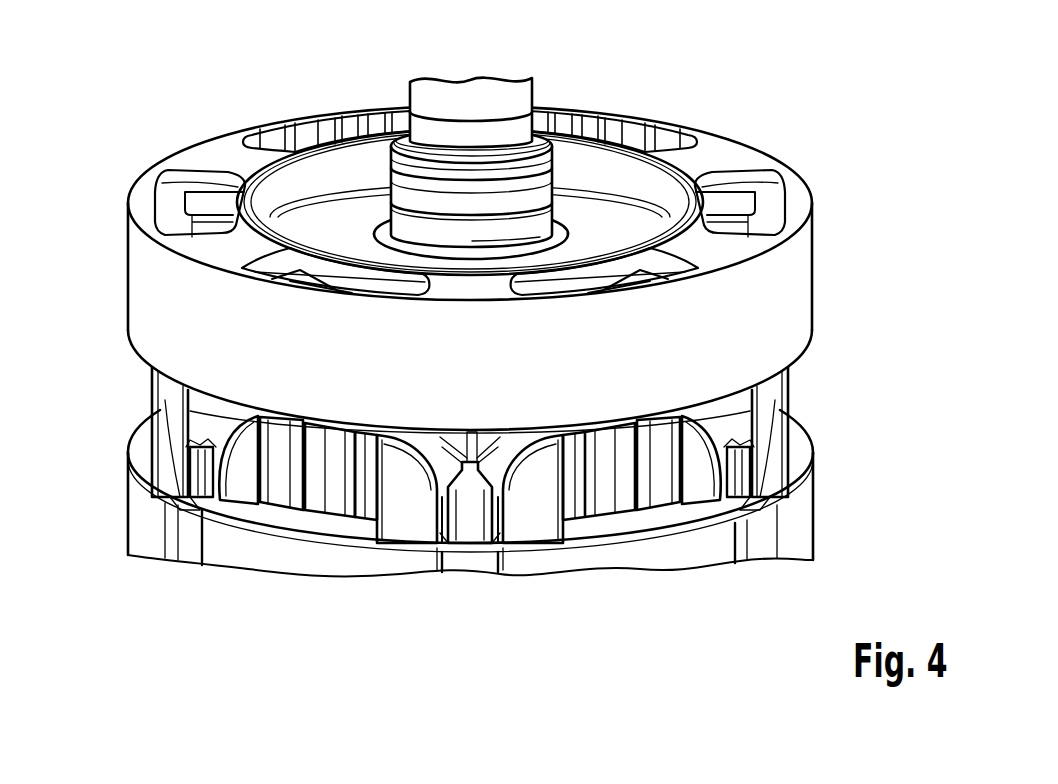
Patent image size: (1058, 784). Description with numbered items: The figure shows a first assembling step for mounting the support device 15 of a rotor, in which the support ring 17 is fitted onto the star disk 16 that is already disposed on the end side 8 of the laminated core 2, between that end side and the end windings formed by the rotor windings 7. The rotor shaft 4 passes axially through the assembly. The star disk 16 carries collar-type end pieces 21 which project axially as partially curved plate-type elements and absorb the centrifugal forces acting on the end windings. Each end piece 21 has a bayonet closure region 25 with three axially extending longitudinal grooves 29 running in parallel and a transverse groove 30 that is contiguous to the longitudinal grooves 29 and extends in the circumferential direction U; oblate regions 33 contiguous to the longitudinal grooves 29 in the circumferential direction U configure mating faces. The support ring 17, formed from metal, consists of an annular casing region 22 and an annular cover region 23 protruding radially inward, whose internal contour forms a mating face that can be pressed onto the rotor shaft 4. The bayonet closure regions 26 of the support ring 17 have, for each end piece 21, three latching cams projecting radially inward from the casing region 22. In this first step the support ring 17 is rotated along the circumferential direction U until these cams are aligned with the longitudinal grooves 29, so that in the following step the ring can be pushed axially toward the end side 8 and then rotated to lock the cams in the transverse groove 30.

The laminated core 2 is at (503, 493).
The rotor shaft 4 is at (471, 132).
The rotor windings 7 is at (471, 568).
The end side 8 is at (788, 432).
The support device 15 is at (910, 413).
The star disk 16 is at (120, 432).
The support ring 17 is at (512, 203).
The end pieces 21 is at (209, 535).
The casing region 22 is at (511, 316).
The cover region 23 is at (470, 181).
The bayonet closure regions 25 is at (369, 559).
The bayonet closure regions 26 is at (326, 89).
The longitudinal grooves 29 is at (314, 528).
The transverse groove 30 is at (243, 518).
The oblate regions 33 is at (628, 528).
The circumferential direction U is at (583, 129).